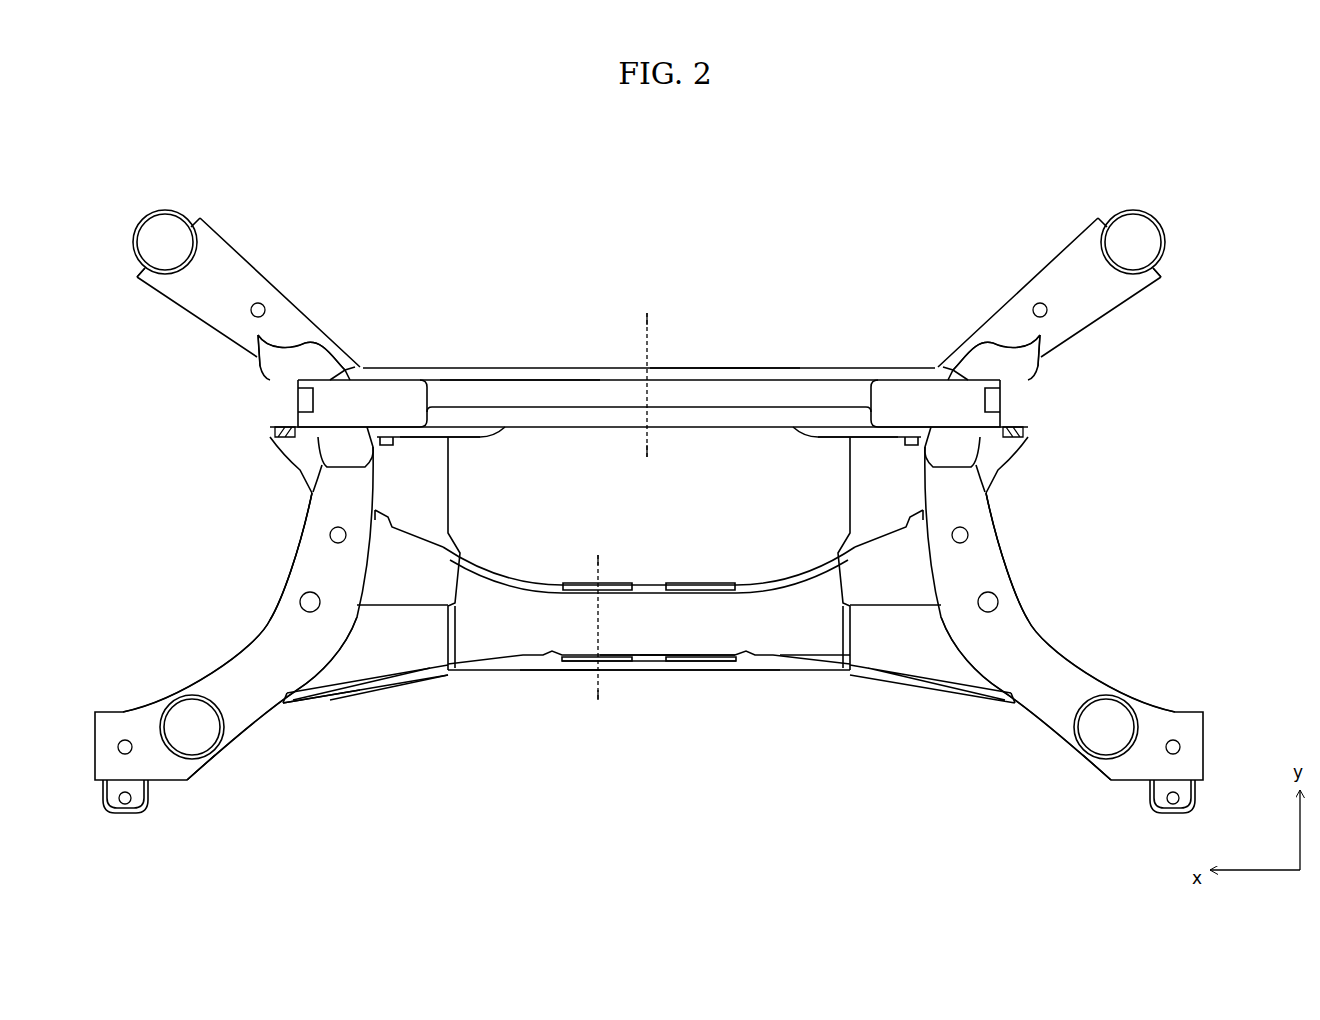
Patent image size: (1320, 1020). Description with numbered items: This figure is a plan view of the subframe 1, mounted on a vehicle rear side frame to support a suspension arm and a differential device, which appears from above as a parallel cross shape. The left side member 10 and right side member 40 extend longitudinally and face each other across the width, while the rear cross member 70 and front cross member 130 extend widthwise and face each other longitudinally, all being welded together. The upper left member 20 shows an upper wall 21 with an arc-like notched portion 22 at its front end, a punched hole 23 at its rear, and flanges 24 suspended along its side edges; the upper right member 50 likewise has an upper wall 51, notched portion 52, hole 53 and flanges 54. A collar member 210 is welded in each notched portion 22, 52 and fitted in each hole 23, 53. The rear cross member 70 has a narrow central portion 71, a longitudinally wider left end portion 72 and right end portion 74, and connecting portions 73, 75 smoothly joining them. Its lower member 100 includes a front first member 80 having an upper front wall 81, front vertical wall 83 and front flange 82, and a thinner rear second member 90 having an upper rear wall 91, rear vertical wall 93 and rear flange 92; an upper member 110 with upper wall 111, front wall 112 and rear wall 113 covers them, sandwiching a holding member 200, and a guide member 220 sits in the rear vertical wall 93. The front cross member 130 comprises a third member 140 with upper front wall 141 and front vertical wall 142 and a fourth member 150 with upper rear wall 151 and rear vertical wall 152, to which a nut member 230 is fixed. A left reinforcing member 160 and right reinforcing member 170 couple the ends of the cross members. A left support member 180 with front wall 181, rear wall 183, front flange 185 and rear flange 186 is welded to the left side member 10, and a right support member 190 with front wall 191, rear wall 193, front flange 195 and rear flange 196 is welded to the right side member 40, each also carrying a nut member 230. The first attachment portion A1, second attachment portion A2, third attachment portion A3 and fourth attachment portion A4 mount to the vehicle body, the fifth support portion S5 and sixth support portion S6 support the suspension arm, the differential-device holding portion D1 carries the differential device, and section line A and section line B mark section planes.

The subframe 1 is at (893, 258).
The left side member 10 is at (213, 515).
The upper left member 20 is at (268, 578).
The upper wall 21 is at (258, 672).
The notched portion 22 is at (172, 256).
The hole 23 is at (165, 715).
The flanges 24 is at (224, 660).
The right side member 40 is at (1067, 555).
The upper right member 50 is at (1030, 608).
The upper wall 51 is at (1060, 695).
The notched portion 52 is at (1140, 262).
The hole 53 is at (1145, 717).
The flanges 54 is at (1042, 640).
The rear cross member 70 is at (668, 735).
The central portion 71 is at (620, 700).
The left end portion 72 is at (375, 745).
The connecting portion 73 is at (455, 708).
The right end portion 74 is at (950, 718).
The connecting portion 75 is at (815, 698).
The first member 80 is at (467, 550).
The upper front wall 81 is at (397, 558).
The front flange 82 is at (830, 563).
The front vertical wall 83 is at (893, 533).
The second member 90 is at (882, 688).
The upper rear wall 91 is at (425, 680).
The rear flange 92 is at (300, 705).
The rear vertical wall 93 is at (352, 698).
The lower member 100 is at (708, 715).
The upper member 110 is at (787, 680).
The upper wall 111 is at (713, 608).
The front wall 112 is at (682, 587).
The rear wall 113 is at (700, 665).
The front cross member 130 is at (565, 325).
The third member 140 is at (762, 352).
The upper front wall 141 is at (508, 392).
The front vertical wall 142 is at (682, 372).
The fourth member 150 is at (667, 443).
The upper rear wall 151 is at (547, 418).
The rear vertical wall 152 is at (767, 430).
The left reinforcing member 160 is at (440, 510).
The right reinforcing member 170 is at (853, 507).
The left support member 180 is at (385, 352).
The front wall 181 is at (323, 373).
The rear wall 183 is at (332, 434).
The front flange 185 is at (290, 365).
The rear flange 186 is at (290, 470).
The right support member 190 is at (888, 355).
The front wall 191 is at (947, 362).
The rear wall 193 is at (975, 432).
The front flange 195 is at (1040, 365).
The rear flange 196 is at (1003, 470).
The holding member 200 is at (627, 585).
The collar member 210 is at (135, 232).
The guide member 220 is at (543, 660).
The nut member 230 is at (277, 433).
The section line A is at (596, 565).
The section line B is at (644, 323).
The first attachment portion A1 is at (118, 255).
The second attachment portion A2 is at (227, 763).
The third attachment portion A3 is at (1185, 257).
The fourth attachment portion A4 is at (1067, 762).
The fifth support portion S5 is at (235, 413).
The sixth support portion S6 is at (1063, 402).
The differential-device holding portion D1 is at (572, 723).